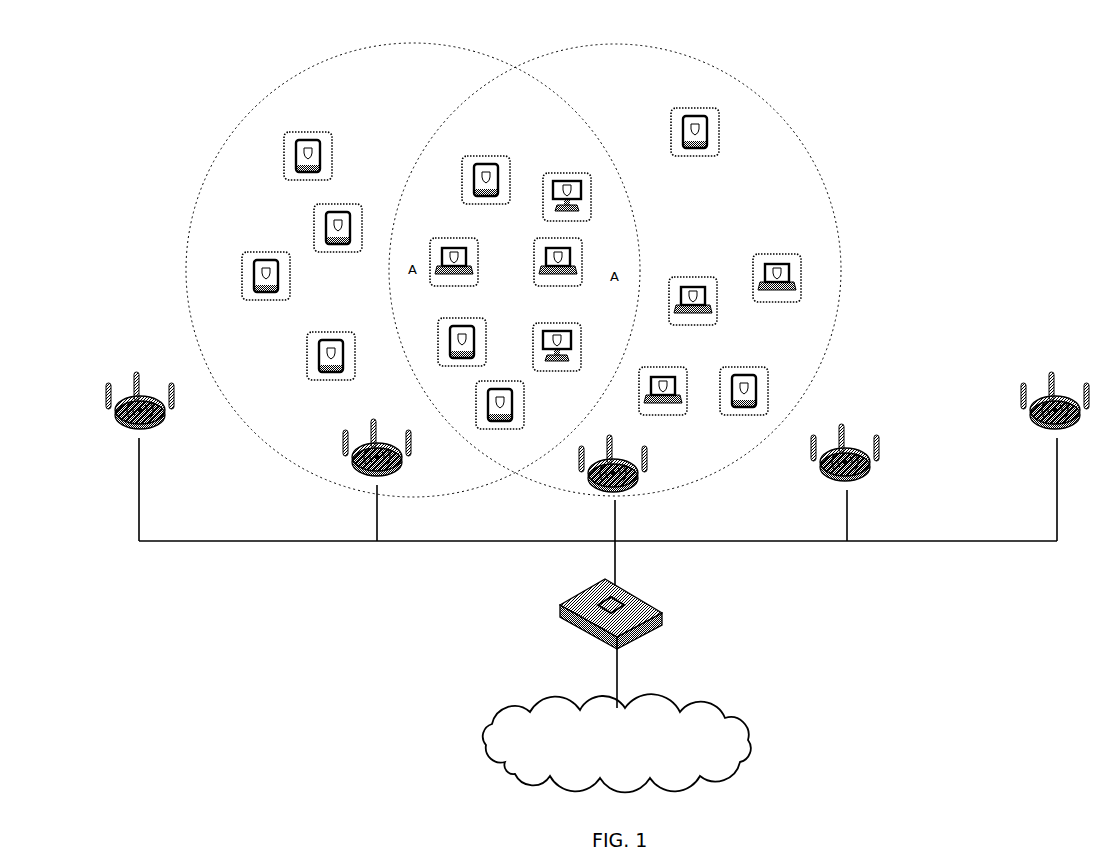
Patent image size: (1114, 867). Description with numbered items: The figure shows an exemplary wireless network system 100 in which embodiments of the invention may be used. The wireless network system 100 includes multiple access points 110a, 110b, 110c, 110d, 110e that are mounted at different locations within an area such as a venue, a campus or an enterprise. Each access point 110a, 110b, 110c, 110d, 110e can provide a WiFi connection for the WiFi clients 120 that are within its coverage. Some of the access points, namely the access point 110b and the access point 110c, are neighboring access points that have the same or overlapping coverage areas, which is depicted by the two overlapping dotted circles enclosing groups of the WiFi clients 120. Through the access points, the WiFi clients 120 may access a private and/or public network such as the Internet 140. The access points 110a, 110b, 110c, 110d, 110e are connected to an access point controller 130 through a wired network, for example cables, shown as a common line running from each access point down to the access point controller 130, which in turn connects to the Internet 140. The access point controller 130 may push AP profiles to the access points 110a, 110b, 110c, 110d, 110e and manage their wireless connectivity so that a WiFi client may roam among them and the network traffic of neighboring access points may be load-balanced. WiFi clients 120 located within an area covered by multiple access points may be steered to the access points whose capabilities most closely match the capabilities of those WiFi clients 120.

The wireless network system 100 is at (582, 41).
The access point 110a is at (108, 422).
The access point 110b is at (343, 470).
The access point 110c is at (573, 478).
The access point 110d is at (816, 468).
The access point 110e is at (1031, 428).
The WiFi clients 120 is at (684, 189).
The access point controller 130 is at (561, 622).
The Internet 140 is at (603, 760).